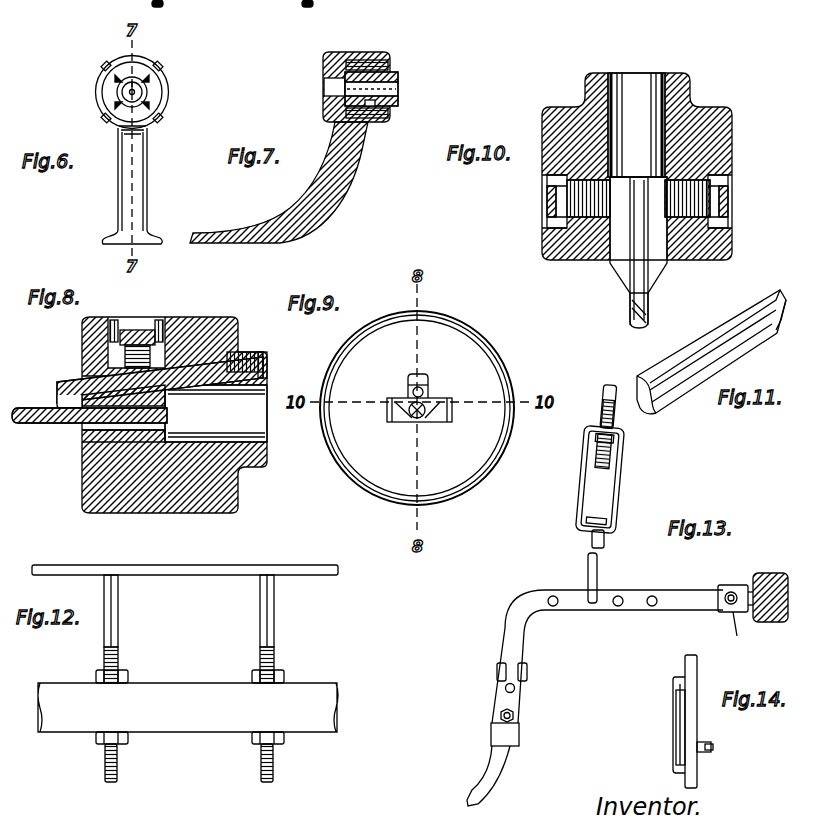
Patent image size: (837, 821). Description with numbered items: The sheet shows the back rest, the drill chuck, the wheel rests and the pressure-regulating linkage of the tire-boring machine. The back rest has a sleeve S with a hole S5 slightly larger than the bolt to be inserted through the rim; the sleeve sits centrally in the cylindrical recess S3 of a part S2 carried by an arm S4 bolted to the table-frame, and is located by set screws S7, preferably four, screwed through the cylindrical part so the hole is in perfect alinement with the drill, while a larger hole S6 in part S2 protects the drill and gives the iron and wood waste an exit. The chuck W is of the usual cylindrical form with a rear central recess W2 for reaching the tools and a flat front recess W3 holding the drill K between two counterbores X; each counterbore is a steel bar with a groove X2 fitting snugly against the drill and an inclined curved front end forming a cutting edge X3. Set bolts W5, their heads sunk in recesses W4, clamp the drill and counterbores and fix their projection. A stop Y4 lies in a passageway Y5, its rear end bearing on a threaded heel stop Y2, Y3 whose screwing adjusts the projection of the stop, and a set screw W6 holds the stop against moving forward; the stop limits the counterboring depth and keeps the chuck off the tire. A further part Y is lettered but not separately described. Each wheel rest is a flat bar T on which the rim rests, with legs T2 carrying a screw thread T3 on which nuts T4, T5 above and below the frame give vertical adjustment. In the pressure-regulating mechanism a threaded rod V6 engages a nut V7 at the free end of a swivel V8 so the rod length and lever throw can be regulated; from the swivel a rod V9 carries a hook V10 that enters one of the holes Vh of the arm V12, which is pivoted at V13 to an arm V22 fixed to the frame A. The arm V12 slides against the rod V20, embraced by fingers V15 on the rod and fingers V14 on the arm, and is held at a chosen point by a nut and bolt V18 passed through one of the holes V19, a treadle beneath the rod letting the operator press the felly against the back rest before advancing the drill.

In FIG. 6, the sleeve S is at (148, 92).
In FIG. 7, the sleeve S is at (400, 77).
In FIG. 6, the part having cylindrical recess S2 is at (143, 61).
In FIG. 7, the part having cylindrical recess S2 is at (360, 56).
In FIG. 6, the cylindrical recess S3 is at (142, 86).
In FIG. 7, the cylindrical recess S3 is at (400, 103).
In FIG. 6, the arm S4 is at (147, 158).
In FIG. 7, the arm S4 is at (355, 172).
In FIG. 7, the hole in sleeve S5 is at (400, 90).
In FIG. 7, the hole S6 is at (332, 88).
In FIG. 6, the set screws S7 is at (162, 66).
In FIG. 7, the set screws S7 is at (395, 64).
In FIG. 10, the chuck W is at (735, 106).
In FIG. 8, the chuck W is at (200, 318).
In FIG. 10, the rear central recess W2 is at (632, 86).
In FIG. 8, the rear central recess W2 is at (232, 418).
In FIG. 10, the flat recess W3 is at (668, 258).
In FIG. 8, the flat recess W3 is at (100, 430).
In FIG. 9, the flat recess W3 is at (390, 412).
In FIG. 10, the recess W4 is at (550, 185).
In FIG. 10, the set bolt W5 is at (556, 205).
In FIG. 8, the set bolt W5 is at (138, 326).
In FIG. 8, the set screw W6 is at (148, 330).
In FIG. 10, the counterbore X is at (622, 255).
In FIG. 11, the counterbore X is at (728, 330).
In FIG. 11, the groove X2 is at (778, 298).
In FIG. 10, the cutting edge X3 is at (625, 282).
In FIG. 9, the cutting edge X3 is at (398, 424).
In FIG. 11, the cutting edge X3 is at (783, 316).
In FIG. 10, the drill K is at (630, 322).
In FIG. 8, the drill K is at (27, 424).
In FIG. 9, the drill K is at (419, 420).
In FIG. 8, the lever Y is at (78, 383).
In FIG. 8, the heel stop Y2 is at (255, 352).
In FIG. 8, the heel stop Y3 is at (267, 362).
In FIG. 8, the stop Y4 is at (62, 398).
In FIG. 9, the stop Y4 is at (428, 390).
In FIG. 8, the passageway Y5 is at (95, 372).
In FIG. 13, the rod V6 is at (604, 390).
In FIG. 13, the nut V7 is at (612, 446).
In FIG. 13, the swivel V8 is at (618, 497).
In FIG. 13, the rod V9 is at (606, 538).
In FIG. 13, the hook V10 is at (603, 611).
In FIG. 13, the holes Vh is at (550, 597).
In FIG. 13, the arm V12 is at (531, 617).
In FIG. 14, the arm V12 is at (685, 665).
In FIG. 13, the pivot V13 is at (732, 590).
In FIG. 13, the hooks or fingers V14 is at (519, 740).
In FIG. 13, the hooks or fingers V15 is at (528, 672).
In FIG. 14, the hooks or fingers V15 is at (697, 682).
In FIG. 13, the nut and bolt V18 is at (514, 715).
In FIG. 14, the nut and bolt V18 is at (697, 748).
In FIG. 13, the holes V19 is at (505, 690).
In FIG. 13, the rod V20 is at (504, 766).
In FIG. 14, the rod V20 is at (684, 716).
In FIG. 13, the arm V22 is at (744, 631).
In FIG. 13, the frame A is at (772, 576).
In FIG. 12, the flat bar T is at (170, 575).
In FIG. 12, the leg T2 is at (120, 627).
In FIG. 12, the screw thread T3 is at (120, 654).
In FIG. 12, the nut T4 is at (130, 678).
In FIG. 12, the nut T5 is at (128, 740).